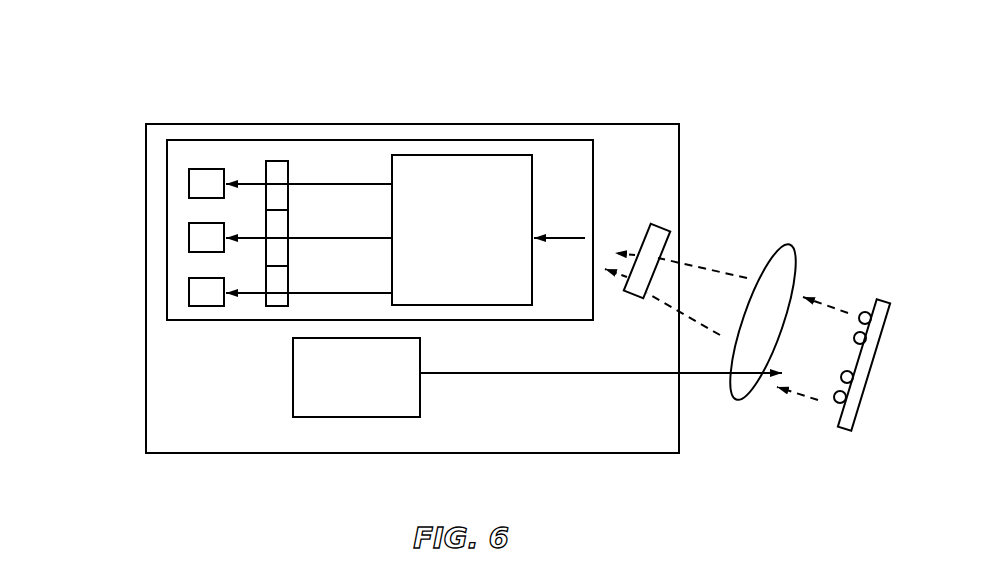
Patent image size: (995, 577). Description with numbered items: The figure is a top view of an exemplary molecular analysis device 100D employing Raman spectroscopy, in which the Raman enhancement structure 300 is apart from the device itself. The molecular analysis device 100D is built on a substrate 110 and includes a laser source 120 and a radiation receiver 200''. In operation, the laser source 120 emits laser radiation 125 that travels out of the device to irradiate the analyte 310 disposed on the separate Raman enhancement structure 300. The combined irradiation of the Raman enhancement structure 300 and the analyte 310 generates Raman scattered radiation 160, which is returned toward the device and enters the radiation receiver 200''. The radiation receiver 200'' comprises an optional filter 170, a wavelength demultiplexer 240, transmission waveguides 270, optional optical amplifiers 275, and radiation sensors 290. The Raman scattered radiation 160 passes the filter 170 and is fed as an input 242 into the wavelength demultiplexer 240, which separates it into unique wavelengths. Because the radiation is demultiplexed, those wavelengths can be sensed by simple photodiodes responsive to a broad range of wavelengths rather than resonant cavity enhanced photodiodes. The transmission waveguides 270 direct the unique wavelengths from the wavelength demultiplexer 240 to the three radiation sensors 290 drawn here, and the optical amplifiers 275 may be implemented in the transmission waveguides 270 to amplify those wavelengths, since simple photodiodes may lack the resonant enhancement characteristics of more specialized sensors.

The molecular analysis device 100D is at (110, 80).
The substrate 110 is at (146, 412).
The laser source 120 is at (293, 372).
The laser radiation 125 is at (562, 373).
The Raman scattered radiation 160 is at (722, 337).
The filter 170 is at (658, 222).
The radiation receiver 200'' is at (380, 191).
The wavelength demultiplexer 240 is at (405, 155).
The input signal 242 is at (562, 238).
The transmission waveguides 270 is at (348, 293).
The optical amplifiers 275 is at (273, 160).
The radiation sensors 290 is at (192, 293).
The Raman enhancement structure 300 is at (878, 300).
The analyte 310 is at (833, 403).